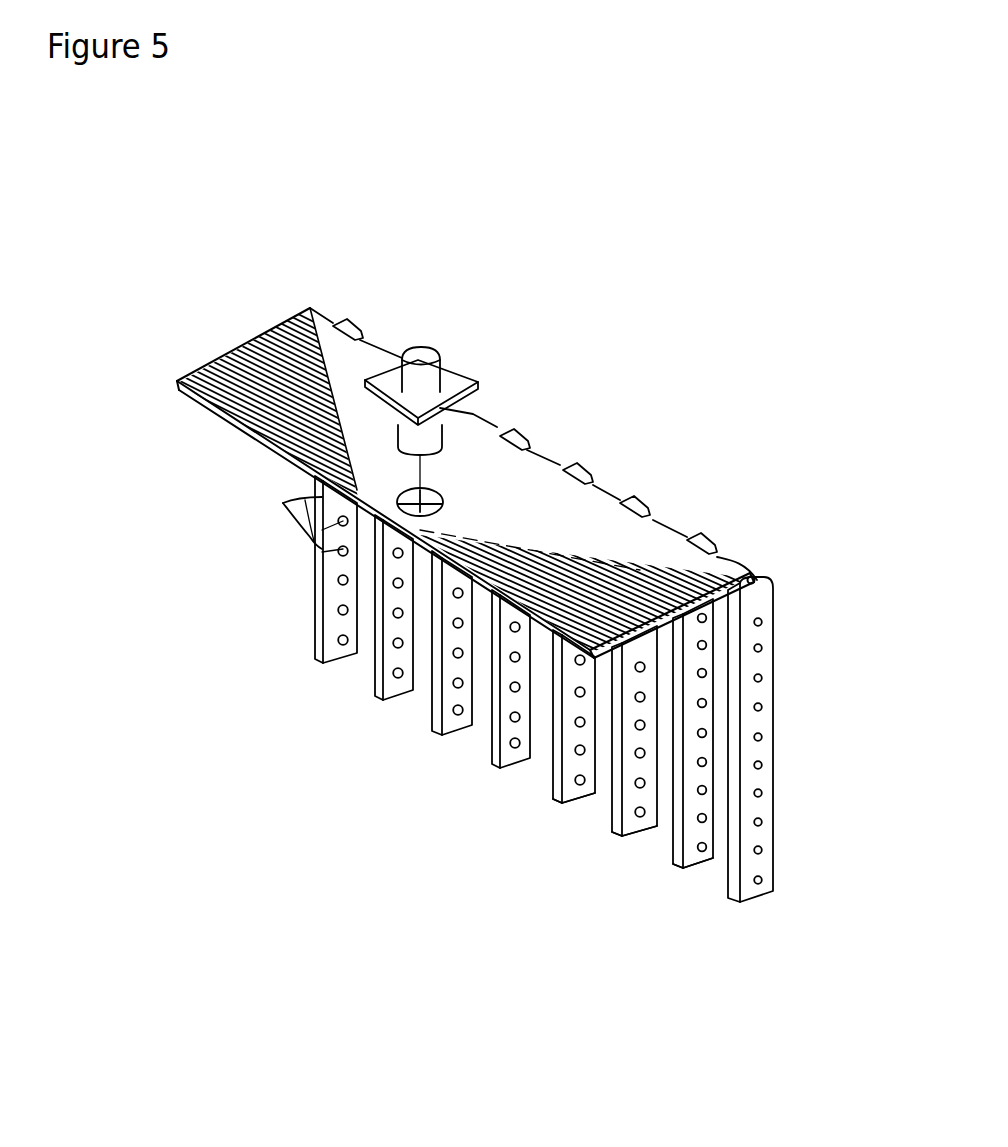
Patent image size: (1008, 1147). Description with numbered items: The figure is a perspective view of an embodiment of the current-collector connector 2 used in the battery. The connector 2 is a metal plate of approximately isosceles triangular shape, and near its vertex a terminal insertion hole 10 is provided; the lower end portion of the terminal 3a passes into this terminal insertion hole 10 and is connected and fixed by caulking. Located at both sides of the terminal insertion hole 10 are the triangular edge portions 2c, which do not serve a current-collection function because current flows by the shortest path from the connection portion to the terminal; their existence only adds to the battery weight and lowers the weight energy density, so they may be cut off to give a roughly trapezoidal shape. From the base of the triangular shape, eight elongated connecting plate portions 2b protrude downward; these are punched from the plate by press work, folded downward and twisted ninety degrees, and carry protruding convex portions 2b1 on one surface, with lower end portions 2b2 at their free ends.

The current-collector connector 2 is at (592, 517).
The connecting plate portions 2b is at (318, 605).
The protruding convex portions 2b1 is at (230, 520).
The lower end of hanging strip 2b2 is at (690, 851).
The triangular edge portions 2c is at (257, 387).
The terminal 3a is at (478, 370).
The terminal insertion hole 10 is at (441, 490).